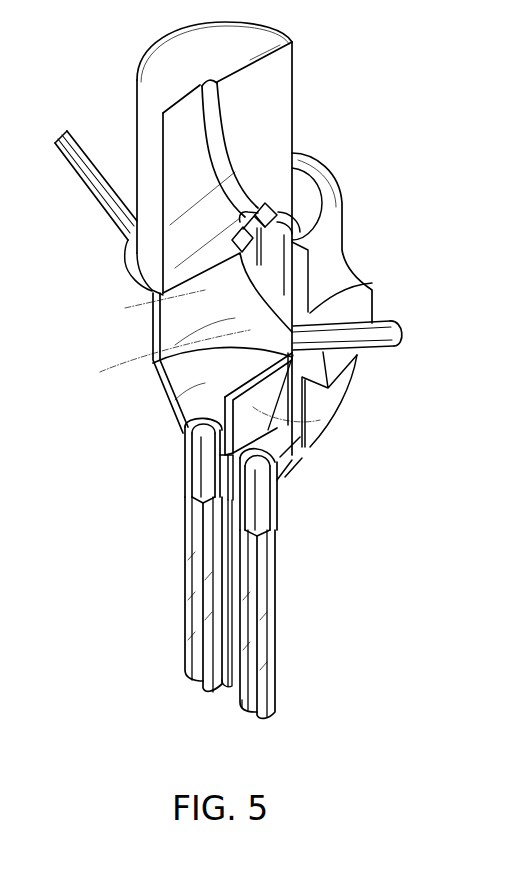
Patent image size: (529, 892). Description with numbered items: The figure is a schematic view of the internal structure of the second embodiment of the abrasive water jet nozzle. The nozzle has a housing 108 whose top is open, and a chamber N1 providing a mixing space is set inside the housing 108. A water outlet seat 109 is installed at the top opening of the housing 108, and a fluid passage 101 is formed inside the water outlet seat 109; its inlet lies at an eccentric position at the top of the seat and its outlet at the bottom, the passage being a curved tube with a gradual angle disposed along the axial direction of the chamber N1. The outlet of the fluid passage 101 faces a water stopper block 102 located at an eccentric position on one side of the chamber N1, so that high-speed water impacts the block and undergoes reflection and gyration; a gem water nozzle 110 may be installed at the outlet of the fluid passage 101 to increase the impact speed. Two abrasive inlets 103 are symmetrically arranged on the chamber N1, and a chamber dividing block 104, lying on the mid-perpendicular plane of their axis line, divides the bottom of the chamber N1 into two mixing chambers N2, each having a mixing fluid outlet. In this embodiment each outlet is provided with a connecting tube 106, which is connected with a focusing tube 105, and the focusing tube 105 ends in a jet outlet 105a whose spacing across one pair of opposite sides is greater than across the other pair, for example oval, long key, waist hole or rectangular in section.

The water outlet seat 109 is at (295, 60).
The fluid passage 101 is at (292, 115).
The gem water nozzle 110 is at (275, 212).
The housing 108 is at (327, 268).
The abrasive inlet 103 is at (92, 202).
The water stopper block 102 is at (153, 300).
The chamber N1 is at (163, 357).
The mixing chamber N2 is at (190, 415).
The chamber dividing block 104 is at (300, 423).
The connecting tube 106 is at (278, 508).
The focusing tube 105 is at (273, 603).
The jet outlet 105a is at (241, 692).